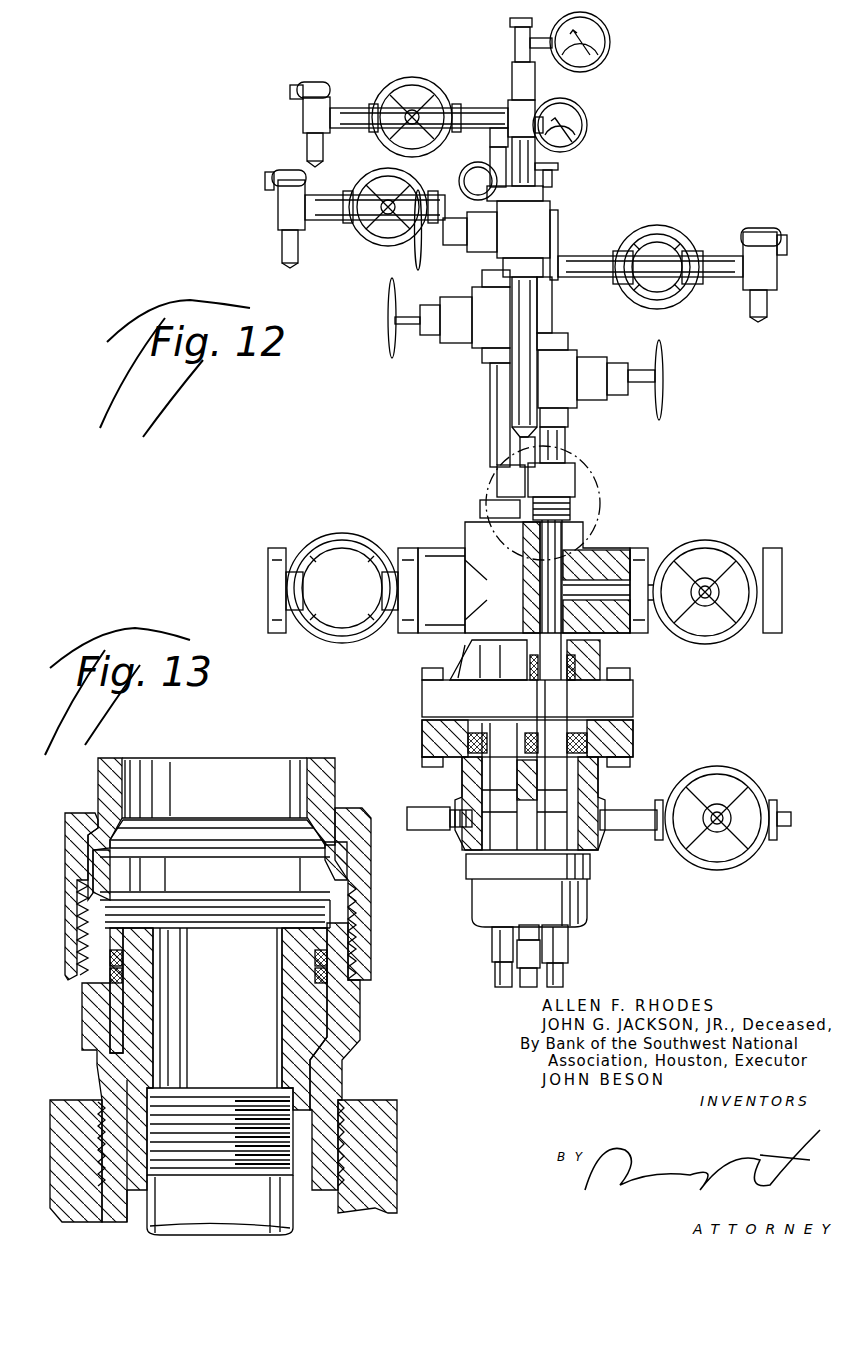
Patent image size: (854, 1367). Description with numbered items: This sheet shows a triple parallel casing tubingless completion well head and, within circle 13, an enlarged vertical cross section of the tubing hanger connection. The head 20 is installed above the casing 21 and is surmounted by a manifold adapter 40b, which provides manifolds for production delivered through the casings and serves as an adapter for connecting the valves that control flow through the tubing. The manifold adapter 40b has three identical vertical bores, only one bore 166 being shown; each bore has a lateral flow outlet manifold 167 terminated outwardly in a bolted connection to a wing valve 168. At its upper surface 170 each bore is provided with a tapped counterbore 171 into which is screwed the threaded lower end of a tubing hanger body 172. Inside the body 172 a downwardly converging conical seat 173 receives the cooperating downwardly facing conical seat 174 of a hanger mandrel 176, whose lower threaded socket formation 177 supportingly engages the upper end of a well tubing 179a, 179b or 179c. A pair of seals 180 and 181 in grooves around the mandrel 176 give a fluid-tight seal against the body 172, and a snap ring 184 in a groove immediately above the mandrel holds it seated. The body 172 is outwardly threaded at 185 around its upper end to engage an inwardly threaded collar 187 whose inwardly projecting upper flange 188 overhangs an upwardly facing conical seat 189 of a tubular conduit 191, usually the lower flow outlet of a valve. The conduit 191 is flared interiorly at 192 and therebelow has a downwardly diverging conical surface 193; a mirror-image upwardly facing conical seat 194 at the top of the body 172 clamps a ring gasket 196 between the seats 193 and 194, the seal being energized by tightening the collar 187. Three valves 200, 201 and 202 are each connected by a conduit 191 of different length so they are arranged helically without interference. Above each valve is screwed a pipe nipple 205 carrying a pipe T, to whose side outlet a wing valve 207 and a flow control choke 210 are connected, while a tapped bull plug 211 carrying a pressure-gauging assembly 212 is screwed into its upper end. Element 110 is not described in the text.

In FIG. 12, the wing valve 207 is at (415, 80).
In FIG. 12, the flow control choke 210 is at (300, 117).
In FIG. 12, the pressure-gauging assembly 212 is at (612, 36).
In FIG. 12, the tapped bull plug 211 is at (532, 57).
In FIG. 12, the pipe nipple 205 is at (523, 157).
In FIG. 12, the valve 201 is at (540, 220).
In FIG. 12, the valve 200 is at (482, 322).
In FIG. 12, the valve 202 is at (568, 355).
In FIG. 12, the circle 13 is at (598, 478).
In FIG. 12, the upper surface 170 is at (477, 522).
In FIG. 12, the bore 166 is at (565, 568).
In FIG. 12, the lateral flow outlet manifold 167 is at (623, 547).
In FIG. 12, the wing valve 168 is at (730, 535).
In FIG. 12, the manifold adapter 40b is at (587, 650).
In FIG. 13, the manifold adapter 40b is at (372, 1160).
In FIG. 12, the head 20 is at (588, 860).
In FIG. 12, the casing 21 is at (590, 900).
In FIG. 12, the well tubing 179a is at (495, 973).
In FIG. 12, the well tubing 179b is at (567, 970).
In FIG. 12, the well tubing 179c is at (563, 975).
In FIG. 13, the well tubing 179c is at (233, 1213).
In FIG. 13, the tubular conduit 191 is at (98, 773).
In FIG. 13, the inwardly projecting upper flange 188 is at (83, 812).
In FIG. 13, the upwardly facing conical seat 189 is at (85, 833).
In FIG. 13, the ring gasket 196 is at (97, 860).
In FIG. 13, the hanger mandrel 176 is at (118, 1000).
In FIG. 13, the tubing hanger body 172 is at (90, 1020).
In FIG. 13, the lower threaded socket formation 177 is at (147, 1107).
In FIG. 13, the interior flare 192 is at (300, 820).
In FIG. 13, the downwardly diverging conical surface 193 is at (317, 843).
In FIG. 13, the upwardly facing conical seat 194 is at (327, 872).
In FIG. 13, the snap ring 184 is at (317, 947).
In FIG. 13, the seal 180 is at (300, 965).
In FIG. 13, the seal 181 is at (300, 985).
In FIG. 13, the seat 173 is at (318, 1043).
In FIG. 13, the inwardly threaded collar 187 is at (355, 808).
In FIG. 13, the outward threads 185 is at (360, 877).
In FIG. 13, the downwardly facing conical seat 174 is at (357, 1055).
In FIG. 13, the hanger 110 is at (352, 1100).
In FIG. 13, the tapped counterbore 171 is at (343, 1133).